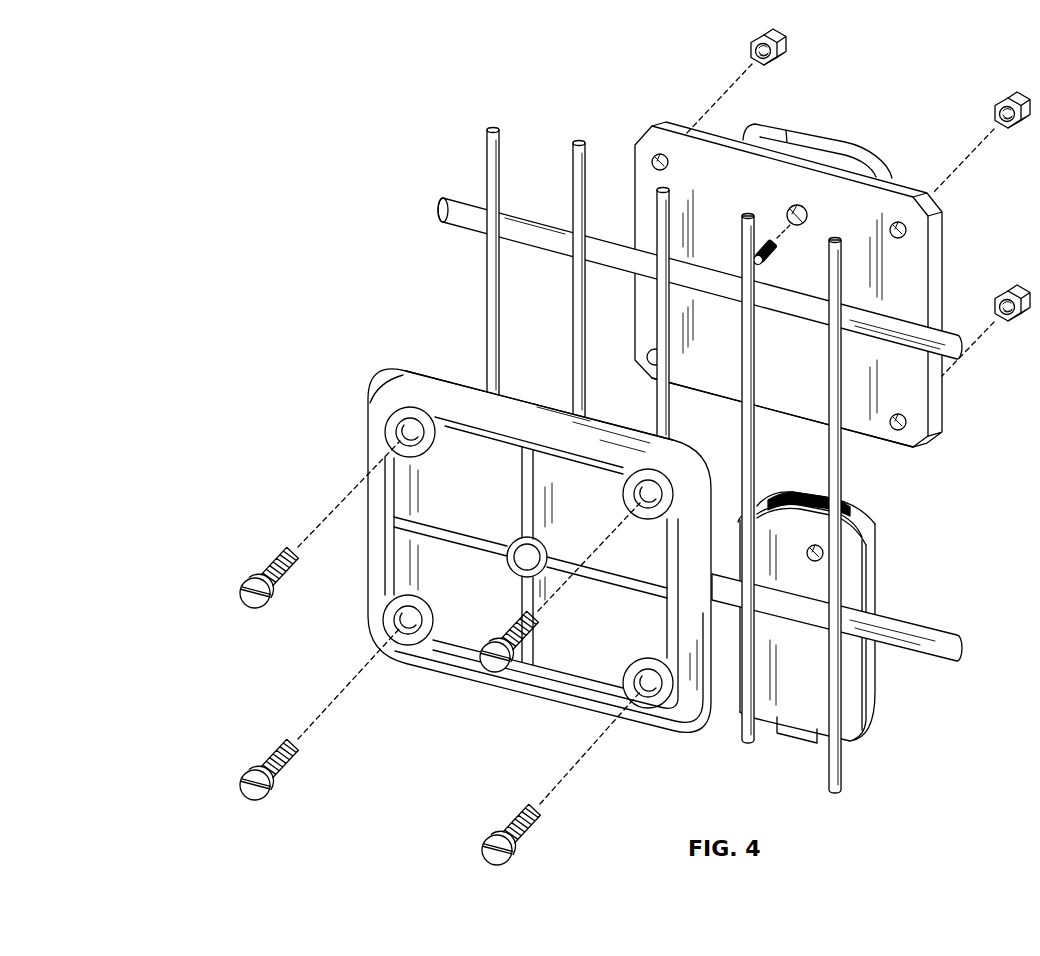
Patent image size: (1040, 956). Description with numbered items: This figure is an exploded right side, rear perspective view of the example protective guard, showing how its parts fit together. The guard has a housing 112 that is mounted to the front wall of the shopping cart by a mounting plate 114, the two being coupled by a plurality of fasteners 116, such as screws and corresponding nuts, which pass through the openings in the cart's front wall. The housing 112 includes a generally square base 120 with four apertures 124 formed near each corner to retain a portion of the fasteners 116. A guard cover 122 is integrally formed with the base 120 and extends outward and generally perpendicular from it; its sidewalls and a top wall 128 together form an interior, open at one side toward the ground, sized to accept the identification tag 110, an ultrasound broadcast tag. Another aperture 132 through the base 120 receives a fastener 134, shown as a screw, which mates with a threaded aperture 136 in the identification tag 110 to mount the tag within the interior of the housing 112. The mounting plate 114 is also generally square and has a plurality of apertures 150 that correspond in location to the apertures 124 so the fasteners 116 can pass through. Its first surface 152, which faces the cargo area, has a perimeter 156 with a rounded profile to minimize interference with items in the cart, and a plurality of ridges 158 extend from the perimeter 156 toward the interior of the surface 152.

The identification tag 110 is at (876, 690).
The housing 112 is at (942, 226).
The mounting plate 114 is at (390, 398).
The fasteners 116 is at (239, 594).
The base 120 is at (877, 445).
The guard cover 122 is at (818, 123).
The apertures 124 is at (654, 171).
The top wall 128 is at (789, 148).
The aperture 132 is at (801, 209).
The fastener 134 is at (769, 247).
The aperture 136 is at (823, 554).
The apertures 150 is at (412, 428).
The first surface 152 is at (463, 645).
The perimeter 156 is at (521, 406).
The ridges 158 is at (527, 495).